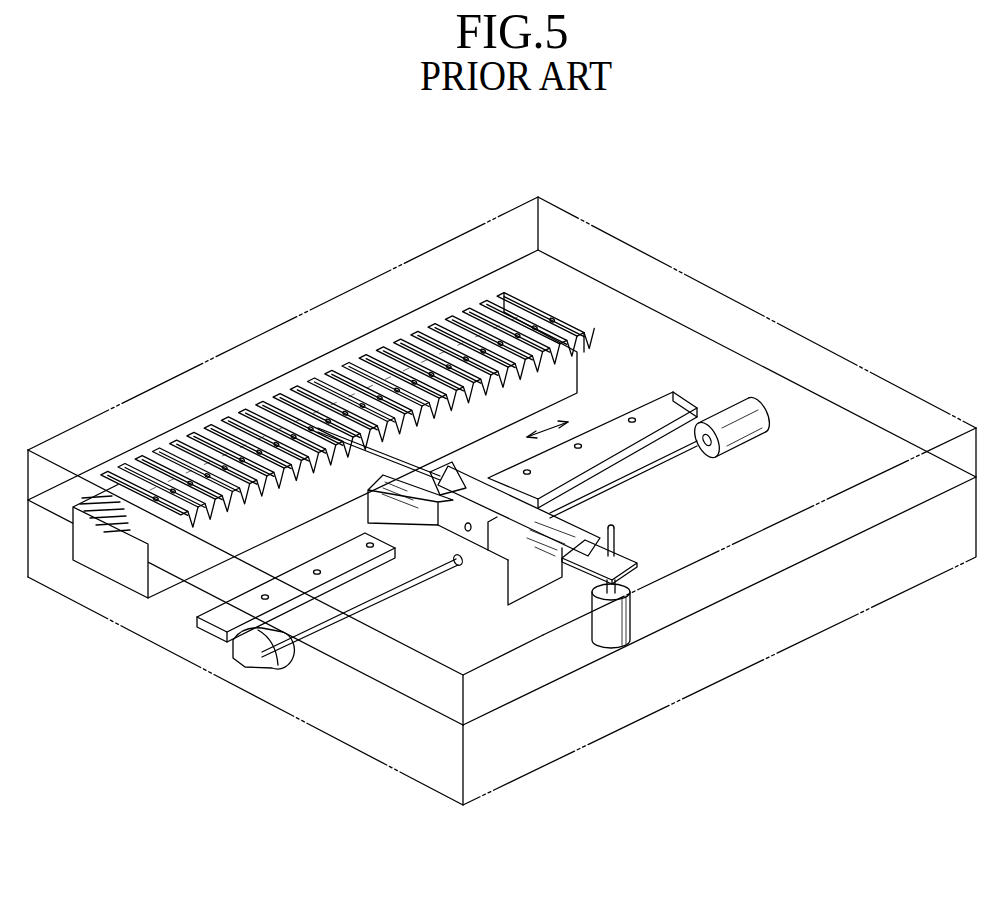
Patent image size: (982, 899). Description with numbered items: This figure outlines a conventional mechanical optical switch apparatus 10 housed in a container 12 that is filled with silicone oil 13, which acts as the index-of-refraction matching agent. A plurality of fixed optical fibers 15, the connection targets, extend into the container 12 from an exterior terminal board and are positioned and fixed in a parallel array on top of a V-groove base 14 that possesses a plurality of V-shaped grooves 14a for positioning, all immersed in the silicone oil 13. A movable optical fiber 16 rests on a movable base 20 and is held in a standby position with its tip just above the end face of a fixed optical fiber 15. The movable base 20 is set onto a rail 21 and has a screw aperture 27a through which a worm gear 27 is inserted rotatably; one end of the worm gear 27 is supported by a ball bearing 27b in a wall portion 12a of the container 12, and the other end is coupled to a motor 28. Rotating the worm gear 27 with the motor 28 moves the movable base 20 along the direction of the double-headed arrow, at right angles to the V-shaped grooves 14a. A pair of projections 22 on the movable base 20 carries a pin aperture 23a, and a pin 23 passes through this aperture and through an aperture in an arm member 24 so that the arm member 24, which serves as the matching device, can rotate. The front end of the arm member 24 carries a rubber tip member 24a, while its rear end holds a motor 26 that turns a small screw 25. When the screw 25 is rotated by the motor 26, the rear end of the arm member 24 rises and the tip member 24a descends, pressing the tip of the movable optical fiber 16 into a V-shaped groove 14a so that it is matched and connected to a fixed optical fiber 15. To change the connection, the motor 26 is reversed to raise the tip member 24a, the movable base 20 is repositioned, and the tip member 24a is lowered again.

The optical switch apparatus 10 is at (655, 218).
The container 12 is at (550, 213).
The wall portion 12a is at (140, 625).
The silicone oil 13 is at (667, 342).
The V-groove base 14 is at (333, 384).
The V-shaped grooves 14a is at (556, 345).
The fixed optical fibers 15 is at (348, 376).
The movable optical fiber 16 is at (310, 440).
The movable base 20 is at (505, 600).
The rail 21 is at (673, 392).
The projections 22 is at (487, 540).
The pin 23 is at (454, 565).
The pin aperture 23a is at (466, 522).
The arm member 24 is at (587, 557).
The tip member 24a is at (322, 428).
The screw 25 is at (618, 534).
The motor 26 is at (620, 645).
The worm gear 27 is at (367, 603).
The screw aperture 27a is at (455, 548).
The ball bearing 27b is at (250, 660).
The motor 28 is at (765, 425).